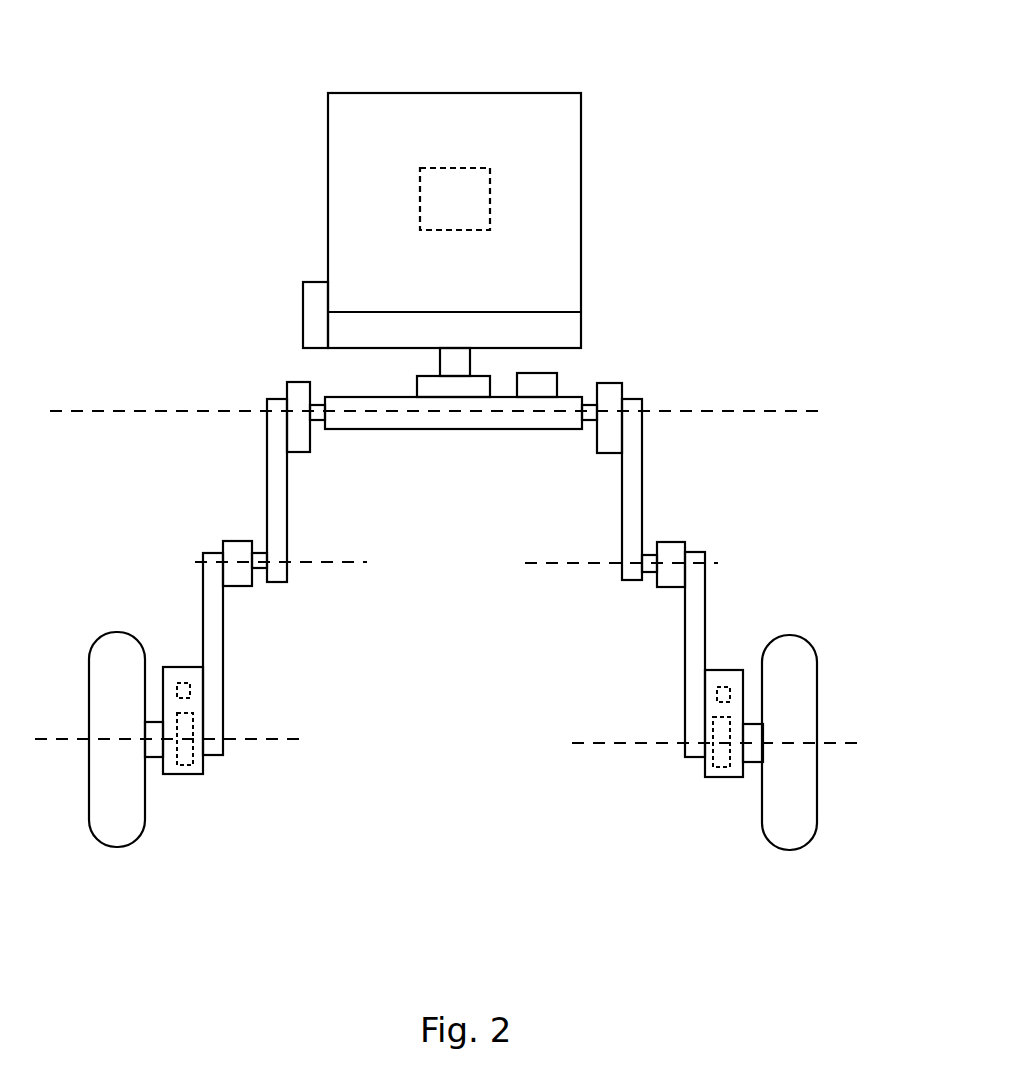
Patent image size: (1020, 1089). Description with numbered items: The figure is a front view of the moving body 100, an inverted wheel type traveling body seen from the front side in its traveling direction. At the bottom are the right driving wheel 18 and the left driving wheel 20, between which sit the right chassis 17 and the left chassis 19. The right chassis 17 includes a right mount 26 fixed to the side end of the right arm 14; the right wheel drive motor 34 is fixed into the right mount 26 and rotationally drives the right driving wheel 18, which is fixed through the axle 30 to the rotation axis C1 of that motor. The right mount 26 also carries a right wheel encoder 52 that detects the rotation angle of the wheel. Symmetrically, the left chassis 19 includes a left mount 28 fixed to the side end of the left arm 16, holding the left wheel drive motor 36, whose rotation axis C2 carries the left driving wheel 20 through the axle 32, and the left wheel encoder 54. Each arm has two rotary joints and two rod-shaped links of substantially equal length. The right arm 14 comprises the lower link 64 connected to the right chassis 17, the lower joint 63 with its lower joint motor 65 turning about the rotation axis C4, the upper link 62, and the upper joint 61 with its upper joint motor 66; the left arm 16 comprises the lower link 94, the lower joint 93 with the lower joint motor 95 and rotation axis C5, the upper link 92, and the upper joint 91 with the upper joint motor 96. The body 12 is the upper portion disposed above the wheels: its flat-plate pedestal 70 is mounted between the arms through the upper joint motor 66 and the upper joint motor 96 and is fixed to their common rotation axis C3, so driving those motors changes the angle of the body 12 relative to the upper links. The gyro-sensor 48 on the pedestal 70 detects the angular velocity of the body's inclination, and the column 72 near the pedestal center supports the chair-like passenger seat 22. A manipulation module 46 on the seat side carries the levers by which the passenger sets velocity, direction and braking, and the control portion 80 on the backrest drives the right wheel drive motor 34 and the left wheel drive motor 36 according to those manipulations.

The moving body 100 is at (470, 42).
The body 12 is at (683, 240).
The passenger seat 22 is at (568, 165).
The control portion 80 is at (477, 168).
The manipulation module 46 is at (290, 280).
The column 72 is at (441, 356).
The gyro-sensor 48 is at (557, 380).
The pedestal 70 is at (508, 423).
The rotation axis C3 is at (763, 411).
The right arm 14 is at (130, 527).
The left arm 16 is at (770, 530).
The upper joint 61 is at (283, 372).
The upper joint 91 is at (634, 376).
The upper link 62 is at (270, 493).
The upper link 92 is at (641, 485).
The lower joint 63 is at (210, 518).
The lower joint 93 is at (697, 510).
The lower link 64 is at (205, 620).
The lower link 94 is at (712, 620).
The lower joint motor 65 is at (243, 587).
The lower joint motor 95 is at (650, 590).
The upper joint motor 66 is at (311, 442).
The upper joint motor 96 is at (598, 448).
The rotation axis C4 is at (347, 562).
The rotation axis C5 is at (537, 562).
The right chassis 17 is at (191, 840).
The left chassis 19 is at (712, 838).
The right driving wheel 18 is at (120, 847).
The left driving wheel 20 is at (792, 850).
The right mount 26 is at (200, 775).
The left mount 28 is at (703, 778).
The axle 30 is at (153, 760).
The axle 32 is at (752, 765).
The right wheel drive motor 34 is at (185, 775).
The left wheel drive motor 36 is at (720, 768).
The right wheel encoder 52 is at (181, 683).
The left wheel encoder 54 is at (723, 687).
The rotation axis C1 is at (280, 740).
The rotation axis C2 is at (615, 740).